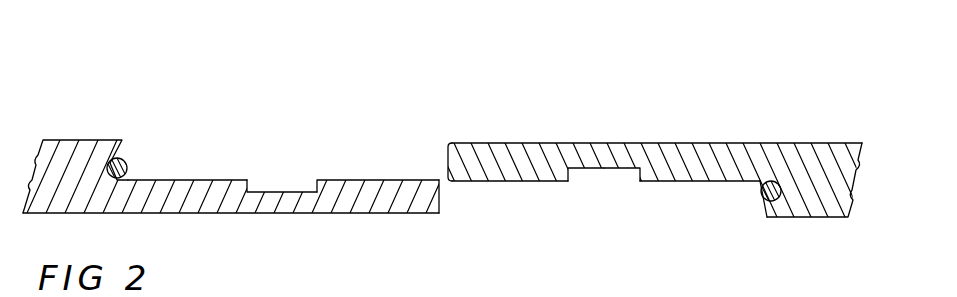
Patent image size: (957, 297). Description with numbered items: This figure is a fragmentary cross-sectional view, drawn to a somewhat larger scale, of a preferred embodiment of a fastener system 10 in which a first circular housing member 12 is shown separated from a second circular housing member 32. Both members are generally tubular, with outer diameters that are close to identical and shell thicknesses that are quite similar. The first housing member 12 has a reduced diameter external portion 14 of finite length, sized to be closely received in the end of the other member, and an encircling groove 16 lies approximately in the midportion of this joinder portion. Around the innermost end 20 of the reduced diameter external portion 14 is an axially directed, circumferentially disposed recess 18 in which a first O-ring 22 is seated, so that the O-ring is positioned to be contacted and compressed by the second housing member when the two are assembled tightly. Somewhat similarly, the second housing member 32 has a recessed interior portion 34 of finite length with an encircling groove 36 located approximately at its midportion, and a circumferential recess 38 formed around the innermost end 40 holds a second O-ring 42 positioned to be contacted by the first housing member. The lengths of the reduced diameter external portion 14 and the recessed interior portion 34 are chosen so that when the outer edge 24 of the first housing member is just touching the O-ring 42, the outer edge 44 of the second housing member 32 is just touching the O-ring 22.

The fastener system 10 is at (533, 77).
The first circular housing member 12 is at (269, 208).
The reduced diameter external portion 14 is at (356, 178).
The encircling groove 16 is at (313, 191).
The recess for an O-ring 18 is at (126, 157).
The innermost end 20 is at (125, 148).
The O-ring 22 is at (124, 180).
The outer edge 24 is at (440, 197).
The second circular housing member 32 is at (683, 143).
The recessed interior portion 34 is at (559, 182).
The encircling groove 36 is at (636, 182).
The recess for an O-ring 38 is at (762, 205).
The innermost end 40 is at (766, 210).
The O-ring 42 is at (777, 180).
The outer edge 44 is at (446, 165).